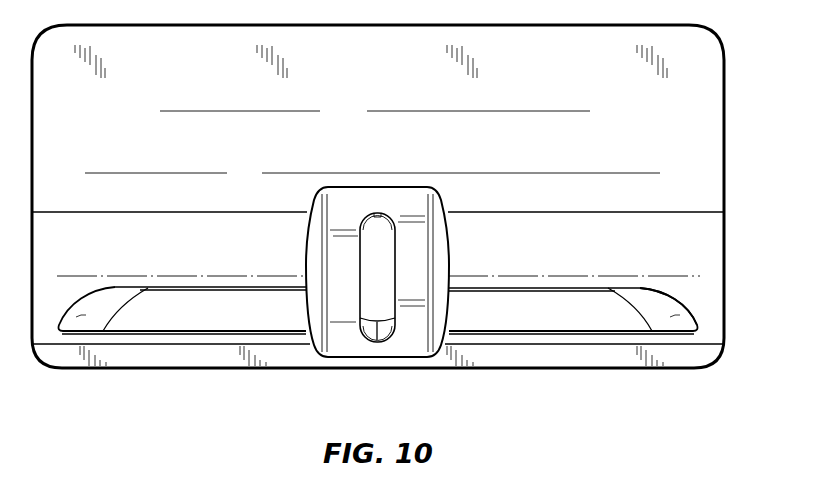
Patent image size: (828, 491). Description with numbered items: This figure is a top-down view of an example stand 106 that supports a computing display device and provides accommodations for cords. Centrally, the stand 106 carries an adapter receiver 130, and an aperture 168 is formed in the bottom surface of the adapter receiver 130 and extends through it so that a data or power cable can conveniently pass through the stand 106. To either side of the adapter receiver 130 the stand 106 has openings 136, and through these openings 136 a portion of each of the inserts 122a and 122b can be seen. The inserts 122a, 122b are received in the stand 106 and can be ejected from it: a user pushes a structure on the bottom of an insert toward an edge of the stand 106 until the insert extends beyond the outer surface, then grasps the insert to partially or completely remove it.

The stand 106 is at (682, 126).
The insert 122a is at (167, 307).
The insert 122b is at (573, 308).
The adapter receiver 130 is at (337, 352).
The openings 136 is at (667, 293).
The aperture 168 is at (383, 302).